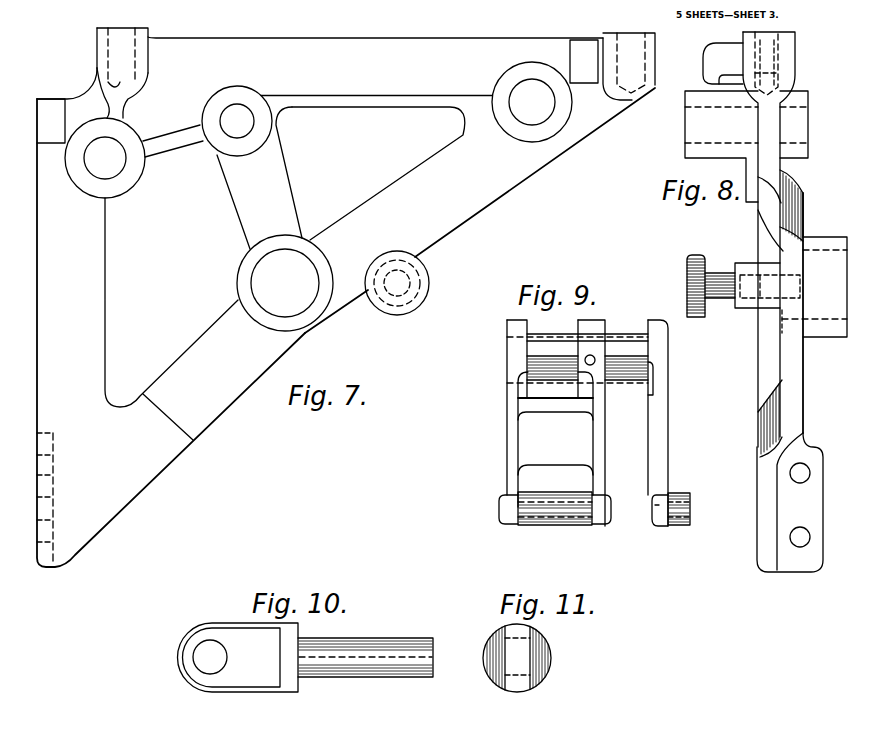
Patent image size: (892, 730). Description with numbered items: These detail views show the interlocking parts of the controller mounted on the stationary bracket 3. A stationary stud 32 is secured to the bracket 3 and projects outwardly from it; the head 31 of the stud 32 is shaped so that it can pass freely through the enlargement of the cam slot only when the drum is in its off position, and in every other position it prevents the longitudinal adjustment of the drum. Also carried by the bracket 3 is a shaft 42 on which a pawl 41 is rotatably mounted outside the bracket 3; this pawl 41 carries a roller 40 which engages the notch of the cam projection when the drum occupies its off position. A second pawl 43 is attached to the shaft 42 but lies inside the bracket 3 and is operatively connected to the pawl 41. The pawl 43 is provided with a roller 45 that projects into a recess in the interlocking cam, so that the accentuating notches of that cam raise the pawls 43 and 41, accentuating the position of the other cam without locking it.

In FIG. 7, the stationary bracket 3 is at (432, 164).
In FIG. 8, the stationary bracket 3 is at (760, 210).
In FIG. 8, the head of stud 31 is at (696, 318).
In FIG. 8, the stationary stud 32 is at (722, 300).
In FIG. 9, the roller 40 is at (558, 526).
In FIG. 9, the pawl 41 is at (512, 432).
In FIG. 9, the shaft 42 is at (625, 337).
In FIG. 9, the pawl 43 is at (663, 437).
In FIG. 9, the roller 45 is at (684, 493).